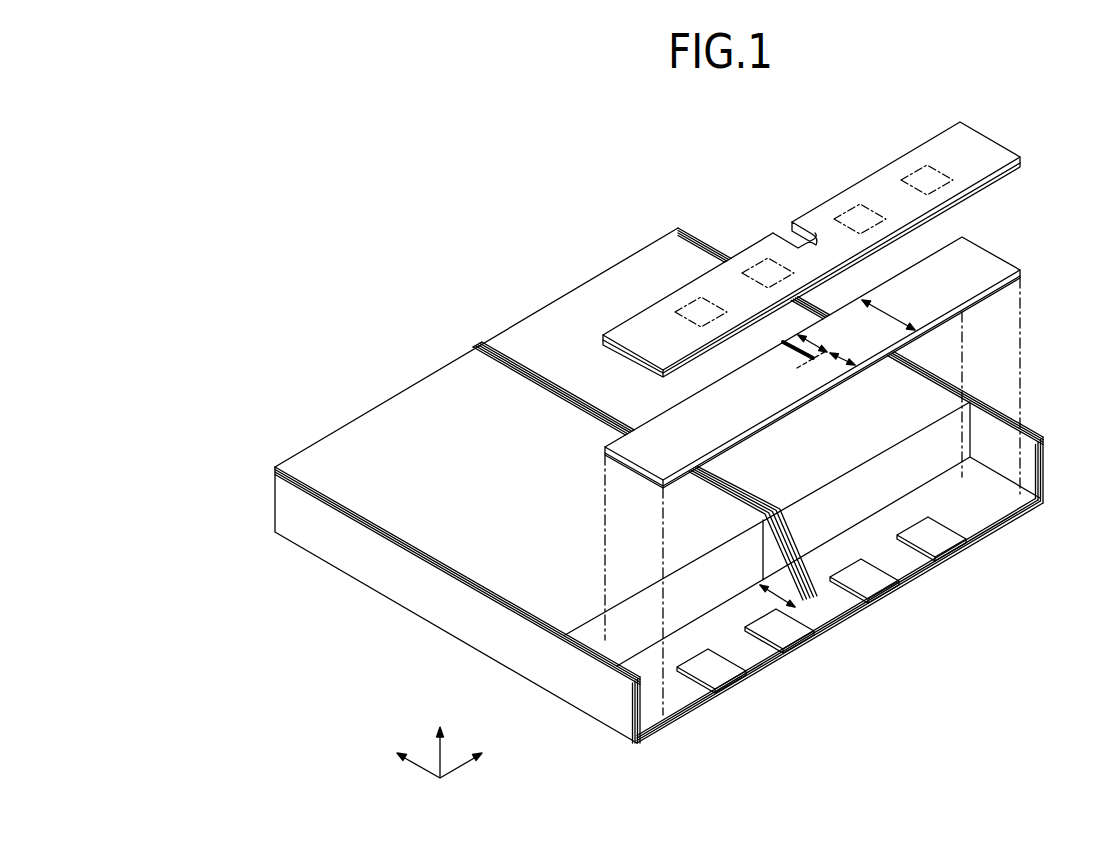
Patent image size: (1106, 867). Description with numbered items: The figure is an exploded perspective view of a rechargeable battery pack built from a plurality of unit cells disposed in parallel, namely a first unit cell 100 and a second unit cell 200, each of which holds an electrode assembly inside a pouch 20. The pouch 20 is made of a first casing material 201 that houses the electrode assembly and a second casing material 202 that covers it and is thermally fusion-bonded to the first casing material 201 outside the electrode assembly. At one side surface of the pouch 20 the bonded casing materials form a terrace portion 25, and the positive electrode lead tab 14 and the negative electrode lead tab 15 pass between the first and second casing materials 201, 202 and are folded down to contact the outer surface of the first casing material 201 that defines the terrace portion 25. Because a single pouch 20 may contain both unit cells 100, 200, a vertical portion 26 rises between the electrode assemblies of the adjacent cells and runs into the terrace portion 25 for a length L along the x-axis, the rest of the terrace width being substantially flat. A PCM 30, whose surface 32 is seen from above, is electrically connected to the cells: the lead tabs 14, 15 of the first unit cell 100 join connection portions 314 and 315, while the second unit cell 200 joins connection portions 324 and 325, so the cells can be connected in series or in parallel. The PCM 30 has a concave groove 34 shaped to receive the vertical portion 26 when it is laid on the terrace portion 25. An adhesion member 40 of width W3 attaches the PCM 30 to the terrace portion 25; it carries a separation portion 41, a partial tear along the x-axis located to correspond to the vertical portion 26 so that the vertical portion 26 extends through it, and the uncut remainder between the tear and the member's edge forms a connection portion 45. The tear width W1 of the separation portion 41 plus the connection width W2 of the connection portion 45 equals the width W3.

The first unit cell 100 is at (283, 560).
The pouch 20 is at (348, 677).
The first casing material 201 is at (447, 512).
The second casing material 202 is at (422, 590).
The terrace portion 25 is at (675, 695).
The positive electrode lead tab 14 is at (717, 675).
The negative electrode lead tab 15 is at (783, 635).
The vertical portion 26 is at (740, 497).
The PCM 30 is at (928, 132).
The board upper surface 32 is at (973, 148).
The concave groove 34 is at (785, 242).
The connection portion 314 is at (688, 305).
The connection portion 315 is at (757, 267).
The connection portion 324 is at (912, 168).
The connection portion 325 is at (847, 210).
The adhesion member 40 is at (978, 262).
The separation portion 41 is at (797, 350).
The connection portion 45 is at (800, 368).
The second unit cell 200 is at (944, 358).
The tear width W1 is at (823, 336).
The connection width W2 is at (854, 351).
The width of the adhesion member W3 is at (891, 314).
The length L is at (773, 601).